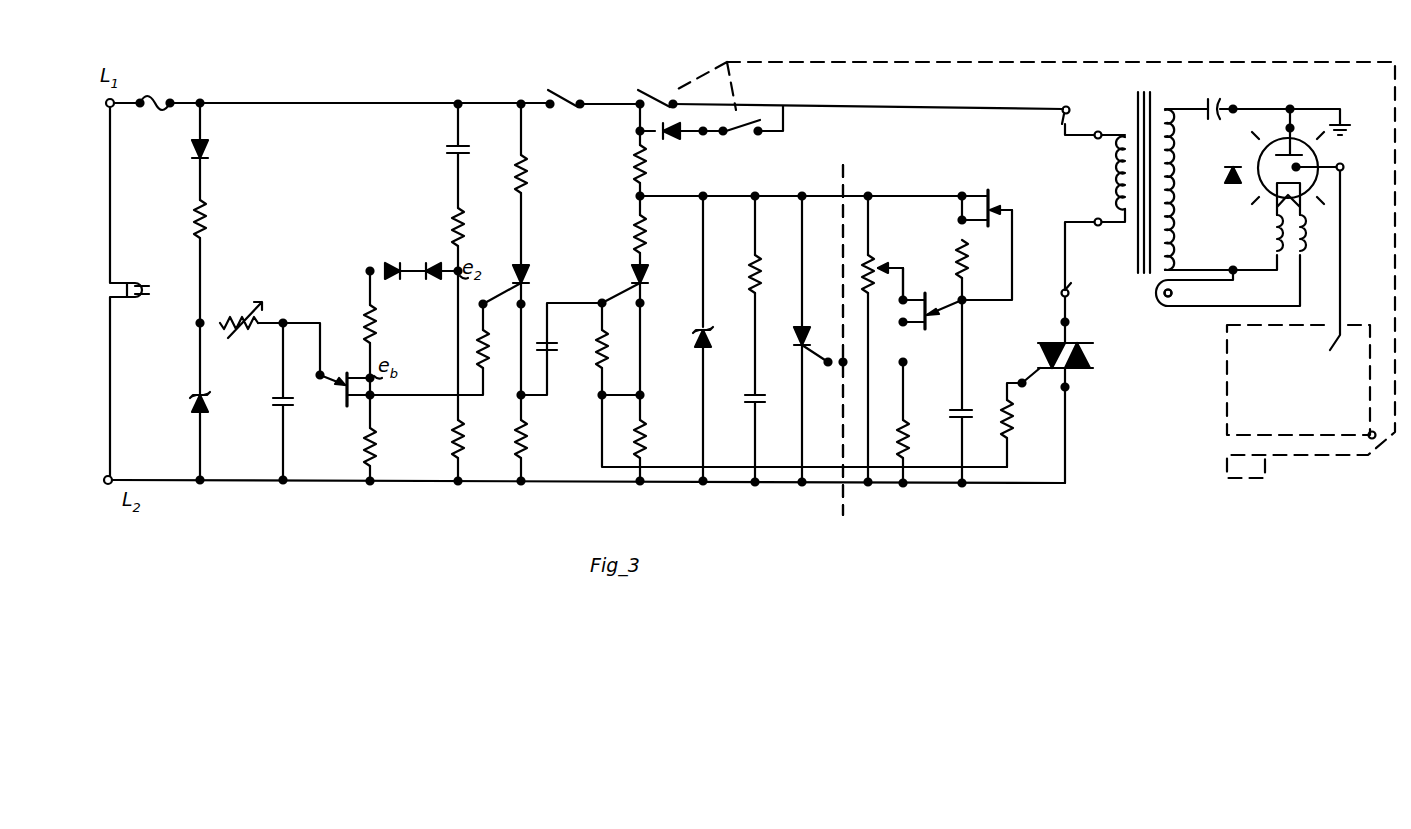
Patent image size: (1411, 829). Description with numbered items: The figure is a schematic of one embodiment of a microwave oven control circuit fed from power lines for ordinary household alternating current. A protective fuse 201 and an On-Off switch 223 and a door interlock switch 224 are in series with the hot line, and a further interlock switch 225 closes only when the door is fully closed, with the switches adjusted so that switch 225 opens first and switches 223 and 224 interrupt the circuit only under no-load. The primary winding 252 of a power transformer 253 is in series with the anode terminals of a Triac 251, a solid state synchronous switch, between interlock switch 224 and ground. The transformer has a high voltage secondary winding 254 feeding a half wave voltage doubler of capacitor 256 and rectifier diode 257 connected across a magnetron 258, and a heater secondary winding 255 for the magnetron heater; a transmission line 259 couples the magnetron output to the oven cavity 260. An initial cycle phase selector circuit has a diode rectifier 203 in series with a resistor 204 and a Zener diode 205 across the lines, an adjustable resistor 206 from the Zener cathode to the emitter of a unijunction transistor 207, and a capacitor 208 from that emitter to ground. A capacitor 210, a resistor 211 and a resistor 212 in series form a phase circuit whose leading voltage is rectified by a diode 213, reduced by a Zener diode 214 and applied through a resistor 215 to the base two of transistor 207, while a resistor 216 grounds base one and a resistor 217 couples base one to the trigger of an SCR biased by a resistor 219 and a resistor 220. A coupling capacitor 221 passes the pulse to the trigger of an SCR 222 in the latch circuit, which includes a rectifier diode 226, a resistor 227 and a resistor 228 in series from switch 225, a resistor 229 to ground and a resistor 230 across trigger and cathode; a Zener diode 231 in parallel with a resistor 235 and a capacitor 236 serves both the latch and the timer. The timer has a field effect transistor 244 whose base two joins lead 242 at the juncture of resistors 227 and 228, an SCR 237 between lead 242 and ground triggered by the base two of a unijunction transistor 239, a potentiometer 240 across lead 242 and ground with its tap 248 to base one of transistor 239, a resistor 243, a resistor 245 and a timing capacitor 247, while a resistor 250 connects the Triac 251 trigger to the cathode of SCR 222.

The protective fuse 201 is at (164, 98).
The diode rectifier 203 is at (209, 150).
The resistor 204 is at (209, 228).
The Zener diode 205 is at (200, 406).
The selectively adjustable resistor 206 is at (238, 316).
The unijunction transistor 207 is at (340, 398).
The capacitor 208 is at (272, 402).
The capacitor 210 is at (470, 150).
The resistor 211 is at (480, 227).
The resistor 212 is at (470, 426).
The diode 213 is at (428, 268).
The Zener diode 214 is at (388, 268).
The resistor 215 is at (374, 336).
The resistor 216 is at (374, 450).
The resistor 217 is at (498, 328).
The resistor 219 is at (543, 174).
The resistor 220 is at (525, 446).
The coupling capacitor 221 is at (558, 346).
The silicon controlled rectifier 222 is at (646, 278).
The On-Off switch 223 is at (565, 94).
The electrical interlock switch 224 is at (660, 88).
The electrical interlock switch 225 is at (738, 132).
The rectifier diode 226 is at (670, 138).
The resistor 227 is at (636, 156).
The resistor 228 is at (632, 240).
The resistor 229 is at (644, 428).
The resistor 230 is at (598, 356).
The Zener diode 231 is at (696, 328).
The resistor 235 is at (748, 274).
The capacitor 236 is at (742, 396).
The silicon controlled rectifier 237 is at (794, 330).
The unijunction transistor 239 is at (928, 326).
The resistor potentiometer 240 is at (876, 264).
The lead 242 is at (846, 192).
The resistor 243 is at (910, 428).
The field effect transistor 244 is at (1000, 206).
The resistor 245 is at (968, 264).
The capacitor 247 is at (970, 410).
The wiper connection 248 is at (906, 276).
The resistor 250 is at (1010, 428).
The Triac semiconductor switch 251 is at (1072, 342).
The primary winding 252 is at (1114, 172).
The power transformer 253 is at (1132, 98).
The high voltage secondary winding 254 is at (1178, 164).
The low voltage heater secondary winding 255 is at (1172, 293).
The capacitor 256 is at (1216, 106).
The rectifier diode 257 is at (1226, 184).
The magnetron 258 is at (1322, 158).
The transmission line 259 is at (1340, 274).
The oven cavity 260 is at (1301, 382).